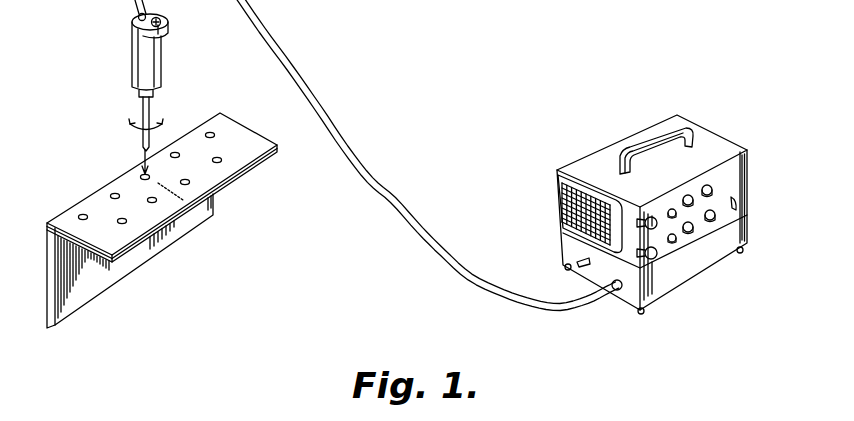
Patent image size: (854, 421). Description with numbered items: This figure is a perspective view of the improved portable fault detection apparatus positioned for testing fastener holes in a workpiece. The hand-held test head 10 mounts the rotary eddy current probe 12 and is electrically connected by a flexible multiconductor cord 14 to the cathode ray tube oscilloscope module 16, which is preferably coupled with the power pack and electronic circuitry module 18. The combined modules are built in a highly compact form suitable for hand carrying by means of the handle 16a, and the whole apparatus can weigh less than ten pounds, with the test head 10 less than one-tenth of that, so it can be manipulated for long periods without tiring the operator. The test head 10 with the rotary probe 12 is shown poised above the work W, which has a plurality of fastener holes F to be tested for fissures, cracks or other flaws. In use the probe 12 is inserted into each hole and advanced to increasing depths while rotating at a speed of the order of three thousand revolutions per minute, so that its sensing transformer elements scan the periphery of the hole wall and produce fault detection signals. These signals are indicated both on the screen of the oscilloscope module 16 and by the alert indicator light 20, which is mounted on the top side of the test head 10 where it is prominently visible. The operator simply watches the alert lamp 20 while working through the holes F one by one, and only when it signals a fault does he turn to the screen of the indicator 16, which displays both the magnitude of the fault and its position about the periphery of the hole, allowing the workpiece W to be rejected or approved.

The hand-held test head 10 is at (136, 52).
The rotary eddy current probe 12 is at (141, 103).
The flexible multiconductor cord 14 is at (369, 165).
The cathode ray tube oscilloscope module 16 is at (726, 150).
The handle 16a is at (650, 145).
The power pack and electronic circuitry module 18 is at (740, 183).
The alert indicator light 20 is at (162, 19).
The work W is at (187, 212).
The fastener holes F is at (140, 176).